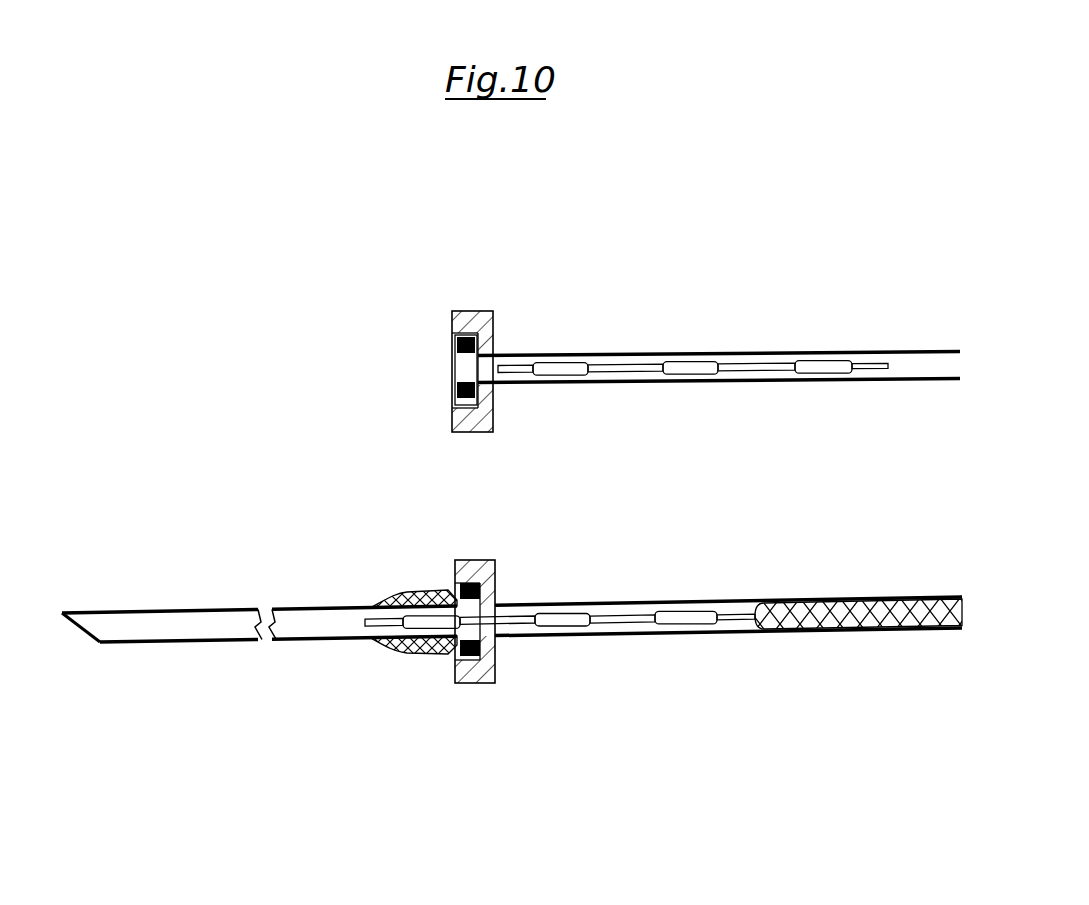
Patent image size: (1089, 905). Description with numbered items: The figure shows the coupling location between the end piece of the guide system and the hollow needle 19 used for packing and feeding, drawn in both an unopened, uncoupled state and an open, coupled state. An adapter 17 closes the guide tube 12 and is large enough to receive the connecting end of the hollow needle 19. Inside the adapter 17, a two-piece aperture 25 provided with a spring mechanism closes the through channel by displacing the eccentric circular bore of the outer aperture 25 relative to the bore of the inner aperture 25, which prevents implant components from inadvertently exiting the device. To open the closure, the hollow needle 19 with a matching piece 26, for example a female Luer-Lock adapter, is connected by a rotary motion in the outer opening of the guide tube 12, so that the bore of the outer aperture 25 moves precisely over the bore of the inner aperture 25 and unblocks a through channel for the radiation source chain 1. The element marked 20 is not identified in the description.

The radiation source chain 1 is at (725, 375).
The guide tube 12 is at (778, 352).
The adapter 17 is at (430, 288).
The hollow needle 19 is at (300, 642).
The braided mesh section 20 is at (962, 615).
The two-piece aperture 25 is at (455, 408).
The matching piece 26 is at (395, 600).